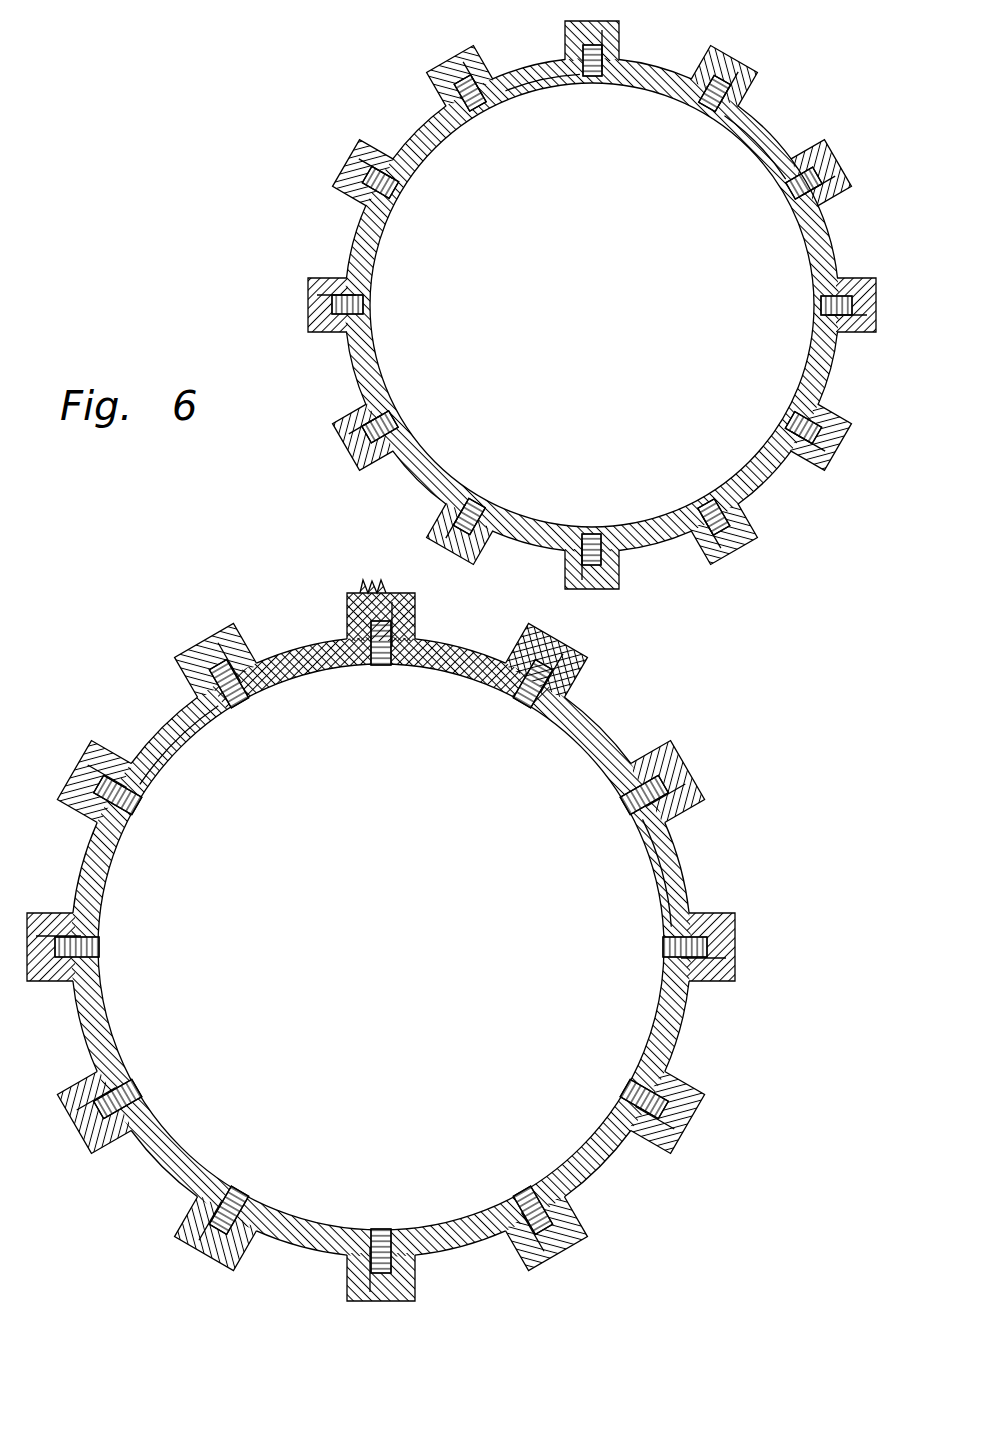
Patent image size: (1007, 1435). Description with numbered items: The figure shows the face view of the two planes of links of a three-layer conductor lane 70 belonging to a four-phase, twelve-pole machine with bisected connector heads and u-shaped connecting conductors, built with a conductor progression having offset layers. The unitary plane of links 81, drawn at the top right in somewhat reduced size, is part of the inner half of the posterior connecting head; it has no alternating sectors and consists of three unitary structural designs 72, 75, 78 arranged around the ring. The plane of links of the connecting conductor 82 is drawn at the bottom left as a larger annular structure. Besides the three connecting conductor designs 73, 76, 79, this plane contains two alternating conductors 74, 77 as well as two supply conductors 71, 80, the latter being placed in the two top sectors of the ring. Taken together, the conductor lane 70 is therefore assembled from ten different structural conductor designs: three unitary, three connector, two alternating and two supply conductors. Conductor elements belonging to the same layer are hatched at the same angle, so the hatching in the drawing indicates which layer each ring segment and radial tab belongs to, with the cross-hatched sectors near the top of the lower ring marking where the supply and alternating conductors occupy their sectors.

The conductor lane 70 is at (358, 582).
The supply conductor 71 is at (379, 579).
The unitary structural design 72 is at (530, 70).
The connecting conductor design 73 is at (177, 713).
The alternating conductor 74 is at (475, 665).
The unitary structural design 75 is at (453, 110).
The connecting conductor design 76 is at (590, 730).
The alternating conductor 77 is at (286, 650).
The unitary structural design 78 is at (557, 82).
The connecting conductor design 79 is at (187, 728).
The supply conductor 80 is at (515, 700).
The unitary plane of links 81 is at (585, 520).
The plane of links of the connecting conductor 82 is at (385, 1215).